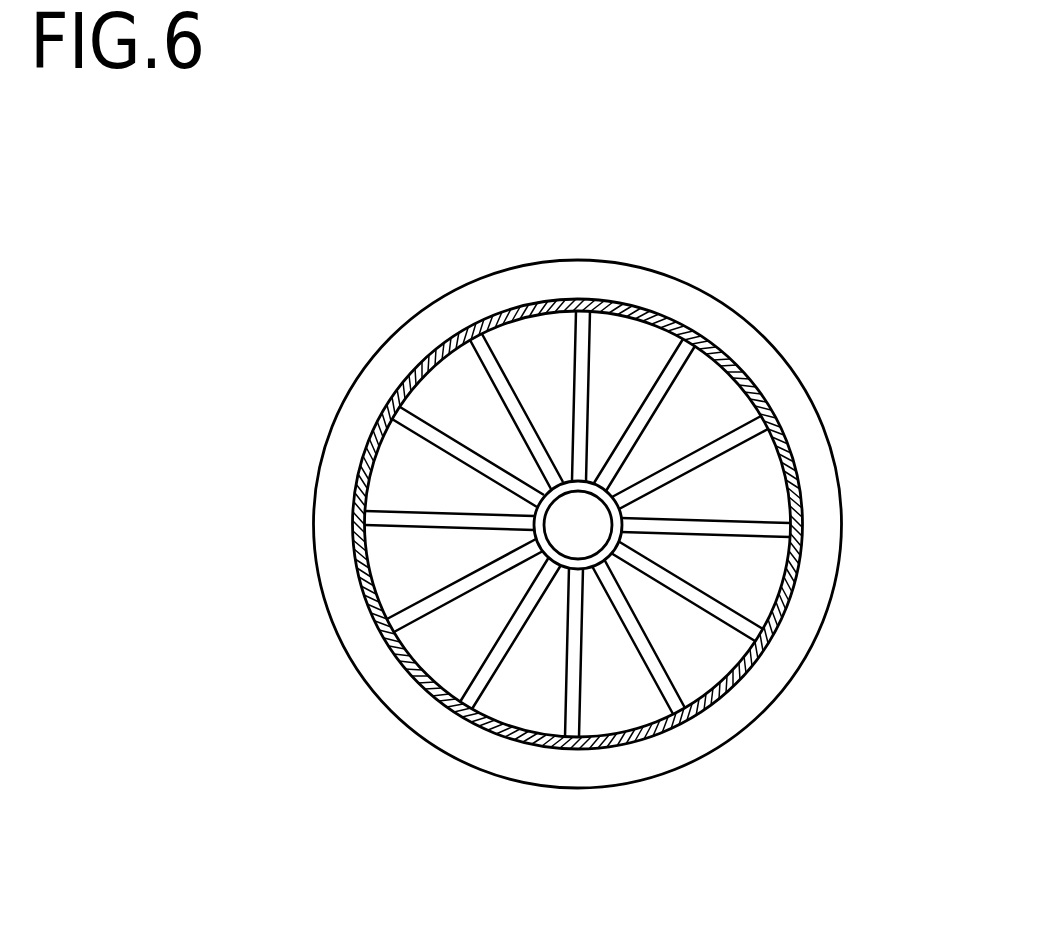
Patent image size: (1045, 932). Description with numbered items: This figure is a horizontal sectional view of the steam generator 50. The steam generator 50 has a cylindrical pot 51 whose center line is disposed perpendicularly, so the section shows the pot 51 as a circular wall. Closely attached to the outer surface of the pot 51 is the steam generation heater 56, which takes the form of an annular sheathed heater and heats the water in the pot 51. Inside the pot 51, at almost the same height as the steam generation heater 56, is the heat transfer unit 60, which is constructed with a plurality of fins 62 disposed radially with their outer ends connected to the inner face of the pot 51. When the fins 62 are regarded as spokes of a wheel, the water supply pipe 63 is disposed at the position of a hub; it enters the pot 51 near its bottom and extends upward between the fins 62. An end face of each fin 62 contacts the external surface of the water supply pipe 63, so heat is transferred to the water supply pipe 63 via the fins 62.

The steam generator 50 is at (318, 260).
The pot 51 is at (368, 432).
The steam generation heater 56 is at (323, 586).
The heat transfer unit 60 is at (623, 347).
The fin 62 is at (713, 527).
The water supply pipe 63 is at (588, 573).